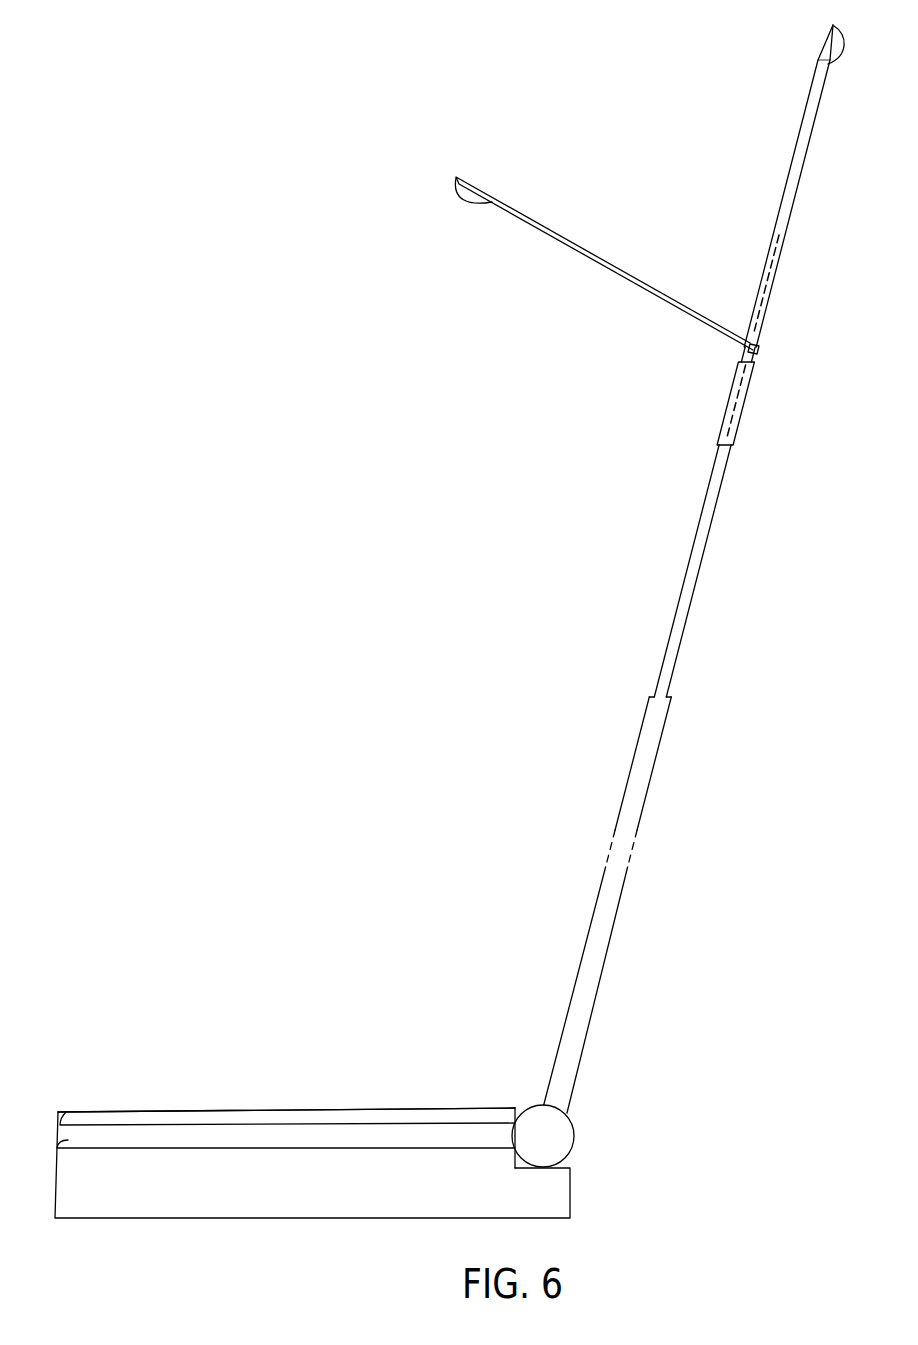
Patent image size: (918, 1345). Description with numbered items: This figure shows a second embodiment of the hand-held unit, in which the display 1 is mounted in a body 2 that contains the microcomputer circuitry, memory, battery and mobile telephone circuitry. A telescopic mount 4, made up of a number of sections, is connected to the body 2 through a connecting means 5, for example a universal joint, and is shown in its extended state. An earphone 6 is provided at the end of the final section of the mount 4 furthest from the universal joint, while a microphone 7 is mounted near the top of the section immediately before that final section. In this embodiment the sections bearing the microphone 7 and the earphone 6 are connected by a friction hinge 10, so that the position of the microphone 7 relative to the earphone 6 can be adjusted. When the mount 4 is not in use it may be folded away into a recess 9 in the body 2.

The display 1 is at (300, 1110).
The body 2 is at (140, 1205).
The telescopic mount 4 is at (610, 949).
The connecting means 5 is at (566, 1131).
The earphone 6 is at (837, 48).
The microphone 7 is at (468, 200).
The recess 9 is at (172, 1136).
The friction hinge 10 is at (760, 343).